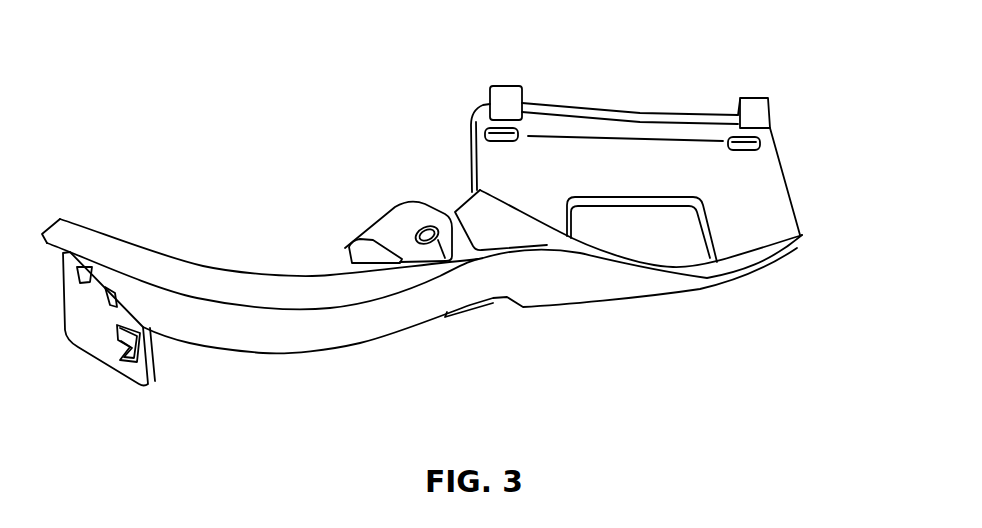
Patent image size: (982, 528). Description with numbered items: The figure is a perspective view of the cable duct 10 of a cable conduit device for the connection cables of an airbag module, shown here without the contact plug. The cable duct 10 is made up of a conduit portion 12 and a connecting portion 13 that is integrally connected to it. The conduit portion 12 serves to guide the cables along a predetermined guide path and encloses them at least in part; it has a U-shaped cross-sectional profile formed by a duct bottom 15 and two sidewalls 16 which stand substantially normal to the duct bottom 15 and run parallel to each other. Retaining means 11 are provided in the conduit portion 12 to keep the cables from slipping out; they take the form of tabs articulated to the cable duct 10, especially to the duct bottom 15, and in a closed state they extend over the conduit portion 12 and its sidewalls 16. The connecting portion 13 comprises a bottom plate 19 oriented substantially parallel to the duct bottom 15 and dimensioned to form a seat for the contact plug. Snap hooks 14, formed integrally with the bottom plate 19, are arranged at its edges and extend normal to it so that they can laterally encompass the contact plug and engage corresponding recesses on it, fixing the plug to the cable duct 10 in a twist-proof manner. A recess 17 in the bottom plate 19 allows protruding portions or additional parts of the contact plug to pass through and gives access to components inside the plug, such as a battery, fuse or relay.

The cable duct 10 is at (344, 92).
The retaining means 11 is at (402, 205).
The conduit portion 12 is at (265, 296).
The connecting portion 13 is at (613, 286).
The snap hooks 14 is at (508, 86).
The duct bottom 15 is at (318, 294).
The sidewalls 16 is at (308, 330).
The recess 17 is at (663, 241).
The bottom plate 19 is at (760, 178).